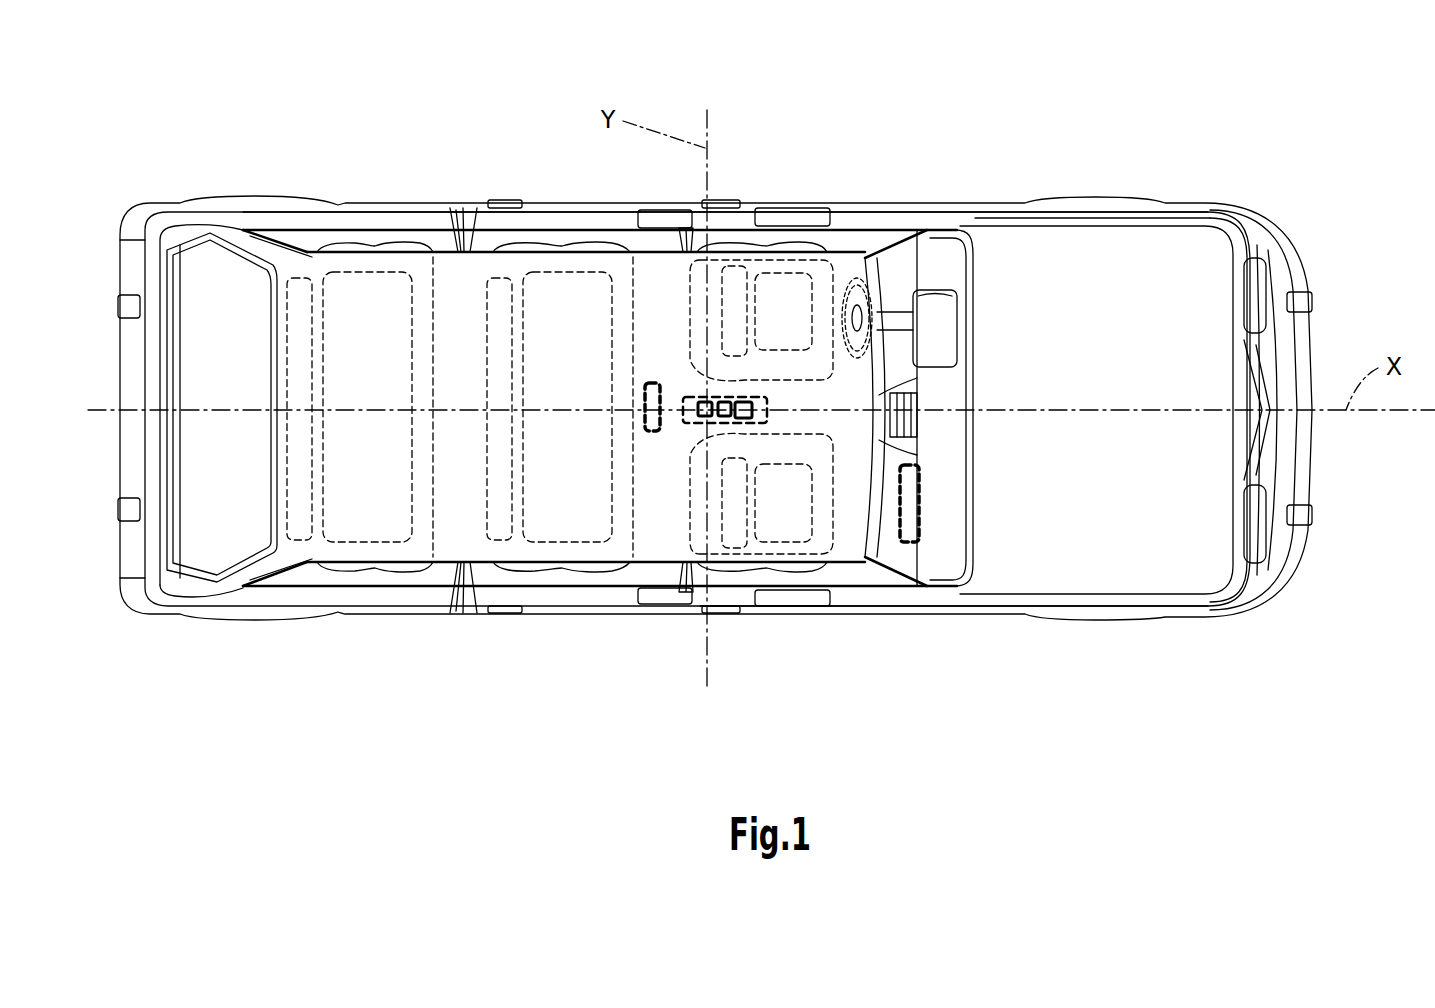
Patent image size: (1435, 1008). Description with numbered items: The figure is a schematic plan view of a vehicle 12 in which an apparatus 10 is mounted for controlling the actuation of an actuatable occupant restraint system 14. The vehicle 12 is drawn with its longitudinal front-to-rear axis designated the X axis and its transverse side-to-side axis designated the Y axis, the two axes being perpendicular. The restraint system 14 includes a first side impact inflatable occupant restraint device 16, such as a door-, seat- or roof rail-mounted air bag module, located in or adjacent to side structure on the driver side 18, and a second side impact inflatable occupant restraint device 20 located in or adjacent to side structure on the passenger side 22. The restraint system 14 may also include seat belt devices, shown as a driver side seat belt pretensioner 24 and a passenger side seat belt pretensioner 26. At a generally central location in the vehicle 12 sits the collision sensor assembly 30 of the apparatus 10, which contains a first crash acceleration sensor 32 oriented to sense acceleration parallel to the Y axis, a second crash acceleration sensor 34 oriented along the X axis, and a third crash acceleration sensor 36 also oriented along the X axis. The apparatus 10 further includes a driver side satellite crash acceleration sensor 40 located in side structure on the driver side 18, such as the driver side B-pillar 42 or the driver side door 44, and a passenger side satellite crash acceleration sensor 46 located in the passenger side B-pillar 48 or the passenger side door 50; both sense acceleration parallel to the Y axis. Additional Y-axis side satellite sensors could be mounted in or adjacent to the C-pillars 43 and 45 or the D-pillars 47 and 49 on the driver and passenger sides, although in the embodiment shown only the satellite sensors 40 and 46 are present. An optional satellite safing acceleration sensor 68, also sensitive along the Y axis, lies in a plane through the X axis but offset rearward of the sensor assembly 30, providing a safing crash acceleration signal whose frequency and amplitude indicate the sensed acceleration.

The apparatus 10 is at (575, 131).
The vehicle 12 is at (1172, 620).
The actuatable occupant restraint system 14 is at (855, 642).
The first side impact inflatable occupant restraint device 16 is at (783, 198).
The driver side 18 is at (1053, 210).
The second side impact inflatable occupant restraint device 20 is at (787, 597).
The passenger side 22 is at (1030, 538).
The driver side seat belt pretensioner 24 is at (788, 262).
The passenger side seat belt pretensioner 26 is at (772, 555).
The collision sensor assembly 30 is at (672, 441).
The first crash acceleration sensor 32 is at (703, 400).
The second crash acceleration sensor 34 is at (724, 400).
The third crash acceleration sensor 36 is at (743, 400).
The driver side satellite crash acceleration sensor 40 is at (667, 213).
The driver side vehicle B-pillar 42 is at (673, 258).
The driver side C-pillar 43 is at (455, 228).
The driver side door 44 is at (867, 203).
The passenger side C-pillar 45 is at (443, 587).
The passenger side satellite crash acceleration sensor 46 is at (660, 597).
The driver side D-pillar 47 is at (258, 228).
The passenger side B-pillar 48 is at (663, 570).
The passenger side D-pillar 49 is at (260, 572).
The passenger side door 50 is at (827, 613).
The satellite safing acceleration sensor 68 is at (645, 420).